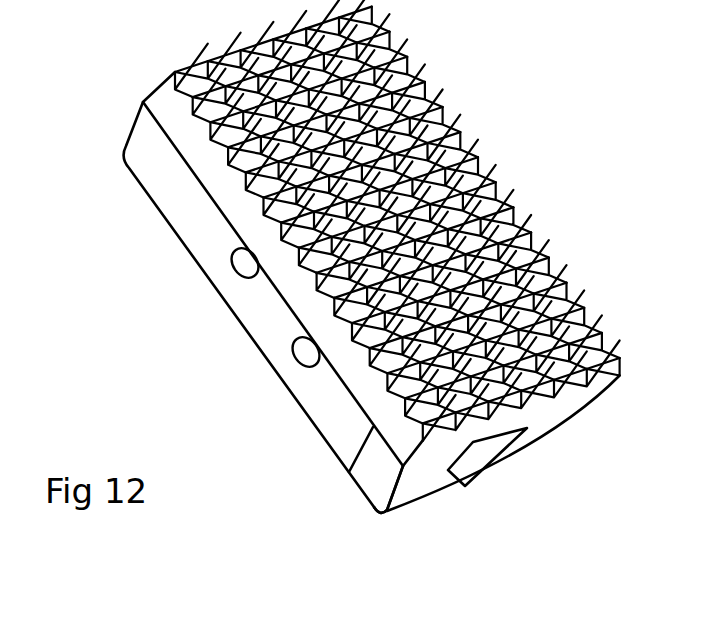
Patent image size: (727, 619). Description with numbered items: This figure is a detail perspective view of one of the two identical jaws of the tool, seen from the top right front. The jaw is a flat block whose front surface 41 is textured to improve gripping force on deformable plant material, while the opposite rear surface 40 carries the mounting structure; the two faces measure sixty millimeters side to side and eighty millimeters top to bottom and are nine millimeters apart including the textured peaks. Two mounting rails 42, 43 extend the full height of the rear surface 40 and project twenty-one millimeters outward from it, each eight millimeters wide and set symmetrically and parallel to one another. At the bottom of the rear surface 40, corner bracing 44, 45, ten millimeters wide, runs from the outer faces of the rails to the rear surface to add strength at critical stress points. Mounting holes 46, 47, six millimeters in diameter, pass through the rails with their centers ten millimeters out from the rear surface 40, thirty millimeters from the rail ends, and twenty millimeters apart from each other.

The rear surface 40 is at (166, 140).
The front surface 41 is at (492, 181).
The mounting rail 42 is at (399, 514).
The mounting rail 43 is at (471, 485).
The corner bracing 44 is at (386, 491).
The corner bracing 45 is at (552, 442).
The mounting hole 46 is at (232, 276).
The mounting hole 47 is at (296, 364).